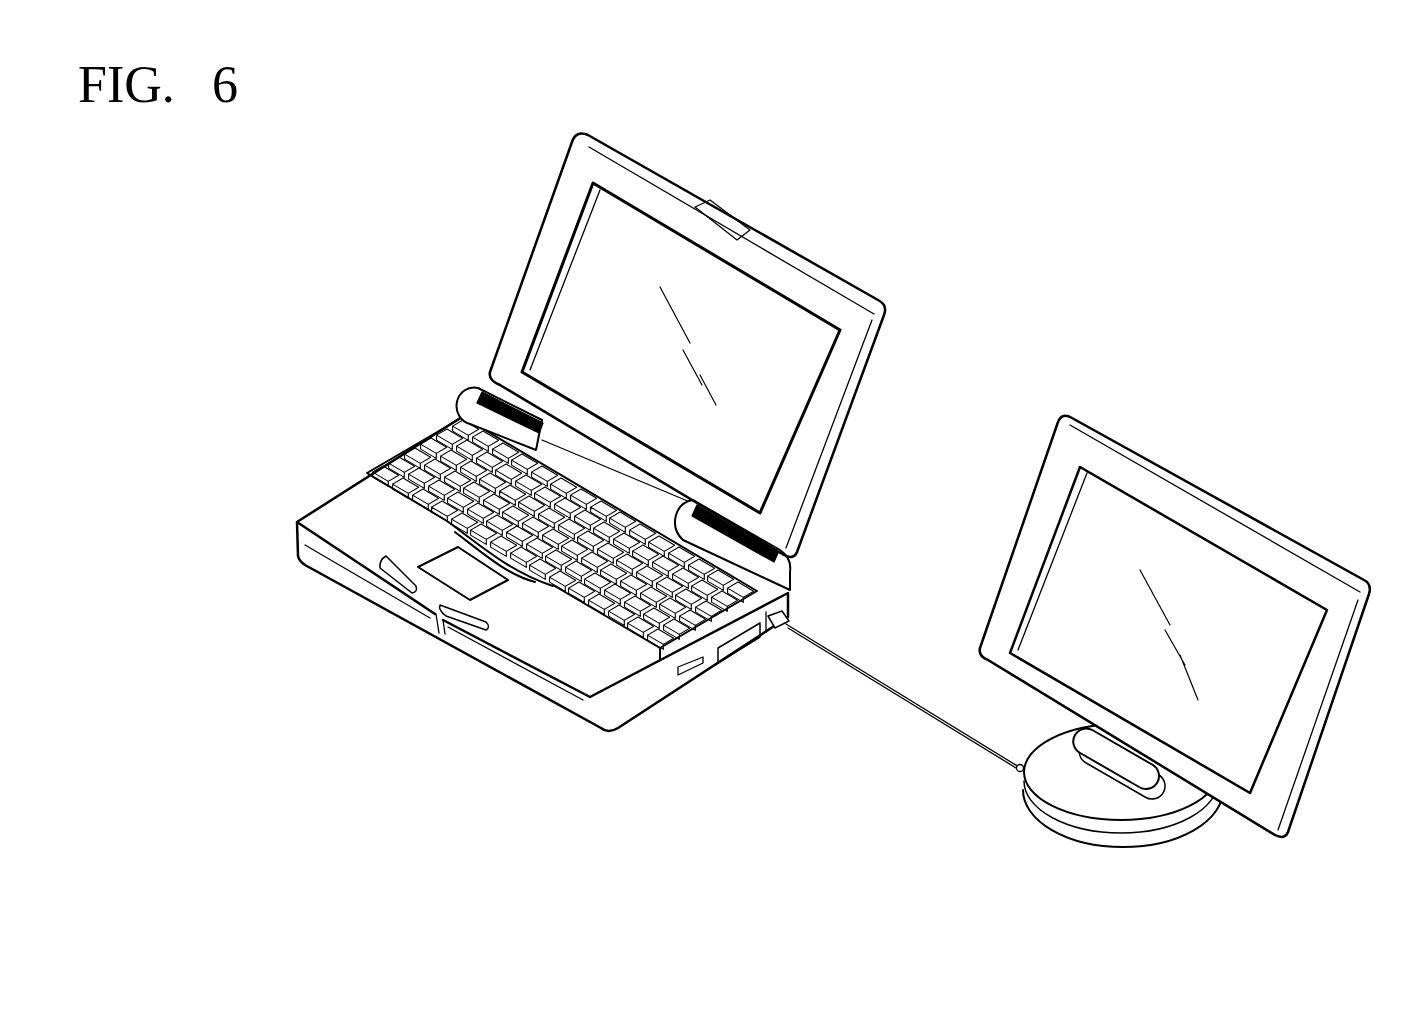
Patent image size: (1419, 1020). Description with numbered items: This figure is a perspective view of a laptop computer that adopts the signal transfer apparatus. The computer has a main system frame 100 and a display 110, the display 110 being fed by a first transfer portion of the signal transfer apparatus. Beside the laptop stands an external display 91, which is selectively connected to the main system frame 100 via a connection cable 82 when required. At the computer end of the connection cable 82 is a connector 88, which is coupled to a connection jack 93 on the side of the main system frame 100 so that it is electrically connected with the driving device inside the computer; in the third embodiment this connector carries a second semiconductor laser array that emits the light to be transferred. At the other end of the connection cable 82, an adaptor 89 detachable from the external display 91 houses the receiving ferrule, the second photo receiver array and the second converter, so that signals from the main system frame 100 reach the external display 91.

The display 110 is at (800, 380).
The main system frame 100 is at (650, 700).
The connection jack 93 is at (771, 634).
The connector 88 is at (788, 623).
The connection cable 82 is at (958, 733).
The adaptor 89 is at (1017, 771).
The external display 91 is at (1273, 657).